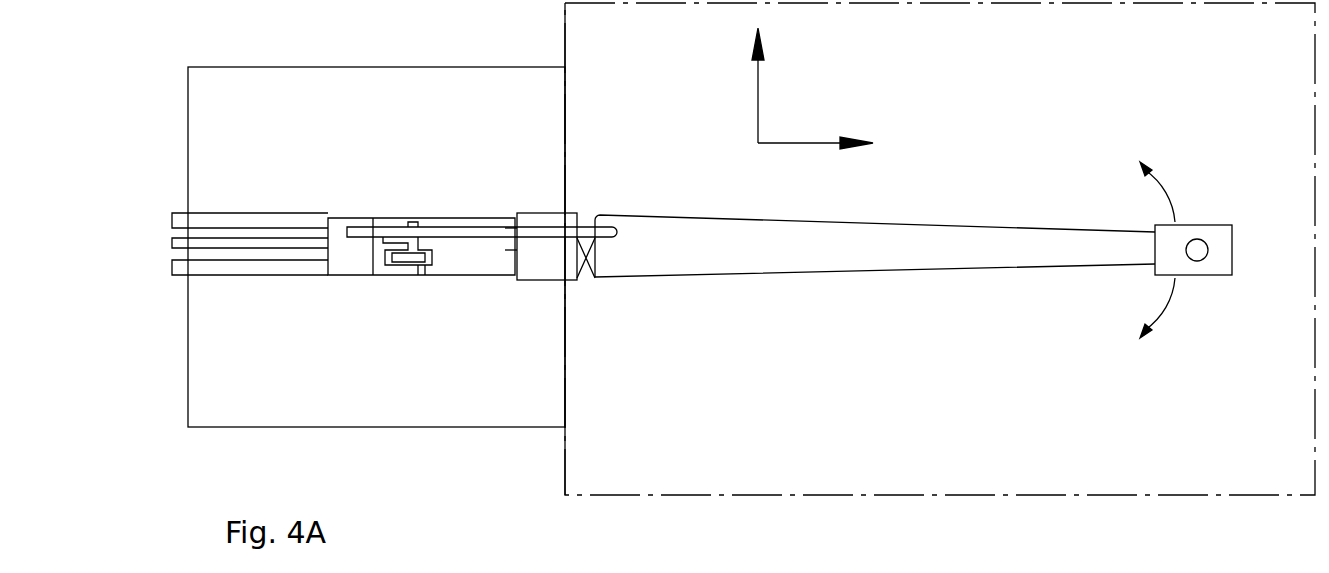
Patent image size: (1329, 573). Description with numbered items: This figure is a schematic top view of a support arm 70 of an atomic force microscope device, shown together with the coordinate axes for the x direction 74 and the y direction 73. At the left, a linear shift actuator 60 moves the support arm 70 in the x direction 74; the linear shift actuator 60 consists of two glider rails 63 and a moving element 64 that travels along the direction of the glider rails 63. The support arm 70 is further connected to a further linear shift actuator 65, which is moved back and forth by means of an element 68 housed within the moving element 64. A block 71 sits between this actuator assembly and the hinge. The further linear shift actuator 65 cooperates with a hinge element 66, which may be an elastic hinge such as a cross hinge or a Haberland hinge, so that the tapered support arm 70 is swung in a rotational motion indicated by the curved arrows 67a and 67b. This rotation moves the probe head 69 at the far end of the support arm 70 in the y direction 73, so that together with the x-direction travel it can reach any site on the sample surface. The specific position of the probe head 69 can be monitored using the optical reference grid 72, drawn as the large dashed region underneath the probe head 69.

The linear shift actuator 60 is at (167, 282).
The glider rails 63 is at (242, 222).
The moving element 64 is at (291, 245).
The further linear shift actuator 65 is at (467, 231).
The hinge element 66 is at (585, 280).
The arrow 67a is at (1165, 196).
The arrow 67b is at (1170, 305).
The element 68 is at (393, 229).
The probe head 69 is at (1234, 250).
The support arm 70 is at (837, 273).
The mounting block 71 is at (540, 282).
The optical reference grid 72 is at (1100, 410).
The y direction 73 is at (755, 98).
The x direction 74 is at (798, 148).